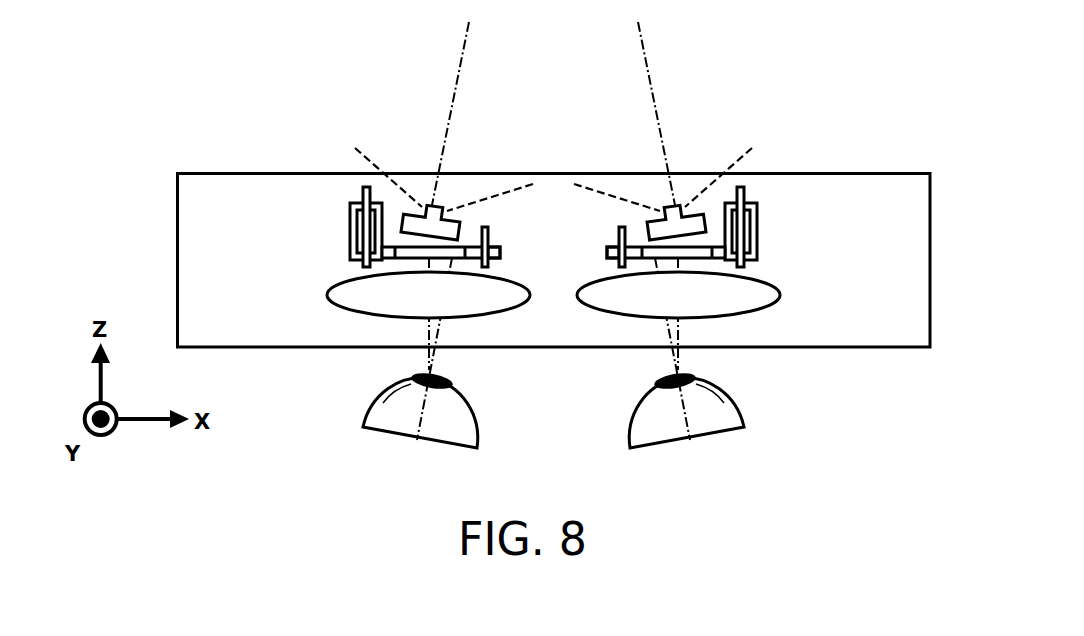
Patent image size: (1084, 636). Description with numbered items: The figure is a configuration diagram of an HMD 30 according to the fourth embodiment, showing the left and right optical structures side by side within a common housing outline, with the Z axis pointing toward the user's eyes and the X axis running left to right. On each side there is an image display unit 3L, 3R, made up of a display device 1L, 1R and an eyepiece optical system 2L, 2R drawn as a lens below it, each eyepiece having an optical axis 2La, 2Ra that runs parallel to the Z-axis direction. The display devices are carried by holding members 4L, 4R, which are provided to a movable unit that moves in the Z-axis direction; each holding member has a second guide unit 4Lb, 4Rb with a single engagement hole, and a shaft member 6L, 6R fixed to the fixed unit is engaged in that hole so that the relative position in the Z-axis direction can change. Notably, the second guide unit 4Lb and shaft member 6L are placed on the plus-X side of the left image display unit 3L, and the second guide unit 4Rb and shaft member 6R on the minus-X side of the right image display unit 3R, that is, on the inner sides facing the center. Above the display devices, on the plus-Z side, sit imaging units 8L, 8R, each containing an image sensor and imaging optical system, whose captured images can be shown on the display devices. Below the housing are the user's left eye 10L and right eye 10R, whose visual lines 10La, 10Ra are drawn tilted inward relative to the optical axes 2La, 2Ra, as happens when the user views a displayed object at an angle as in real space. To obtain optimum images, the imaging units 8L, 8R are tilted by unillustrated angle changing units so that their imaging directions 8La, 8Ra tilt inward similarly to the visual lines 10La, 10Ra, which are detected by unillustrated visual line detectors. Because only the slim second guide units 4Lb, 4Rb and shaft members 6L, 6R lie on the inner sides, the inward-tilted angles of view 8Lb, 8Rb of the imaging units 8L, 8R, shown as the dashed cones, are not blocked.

The HMD 30 is at (212, 162).
The display device 1L is at (385, 261).
The display device 1R is at (783, 246).
The eyepiece optical system 2L is at (327, 304).
The eyepiece optical system 2R is at (710, 305).
The optical axis 2La is at (428, 330).
The optical axis 2Ra is at (730, 314).
The image display unit 3L is at (380, 263).
The image display unit 3R is at (735, 263).
The holding member 4L is at (500, 258).
The holding member 4R is at (642, 262).
The second guide unit 4Lb is at (494, 243).
The second guide unit 4Rb is at (589, 236).
The shaft member 6L is at (486, 226).
The shaft member 6R is at (608, 196).
The imaging unit 8L is at (425, 206).
The imaging unit 8R is at (679, 159).
The imaging direction 8La is at (460, 63).
The imaging direction 8Ra is at (680, 113).
The angle of view 8Lb is at (465, 204).
The angle of view 8Rb is at (680, 152).
The left eye 10L is at (371, 402).
The right eye 10R is at (720, 409).
The visual line 10La is at (436, 331).
The visual line 10Ra is at (633, 349).